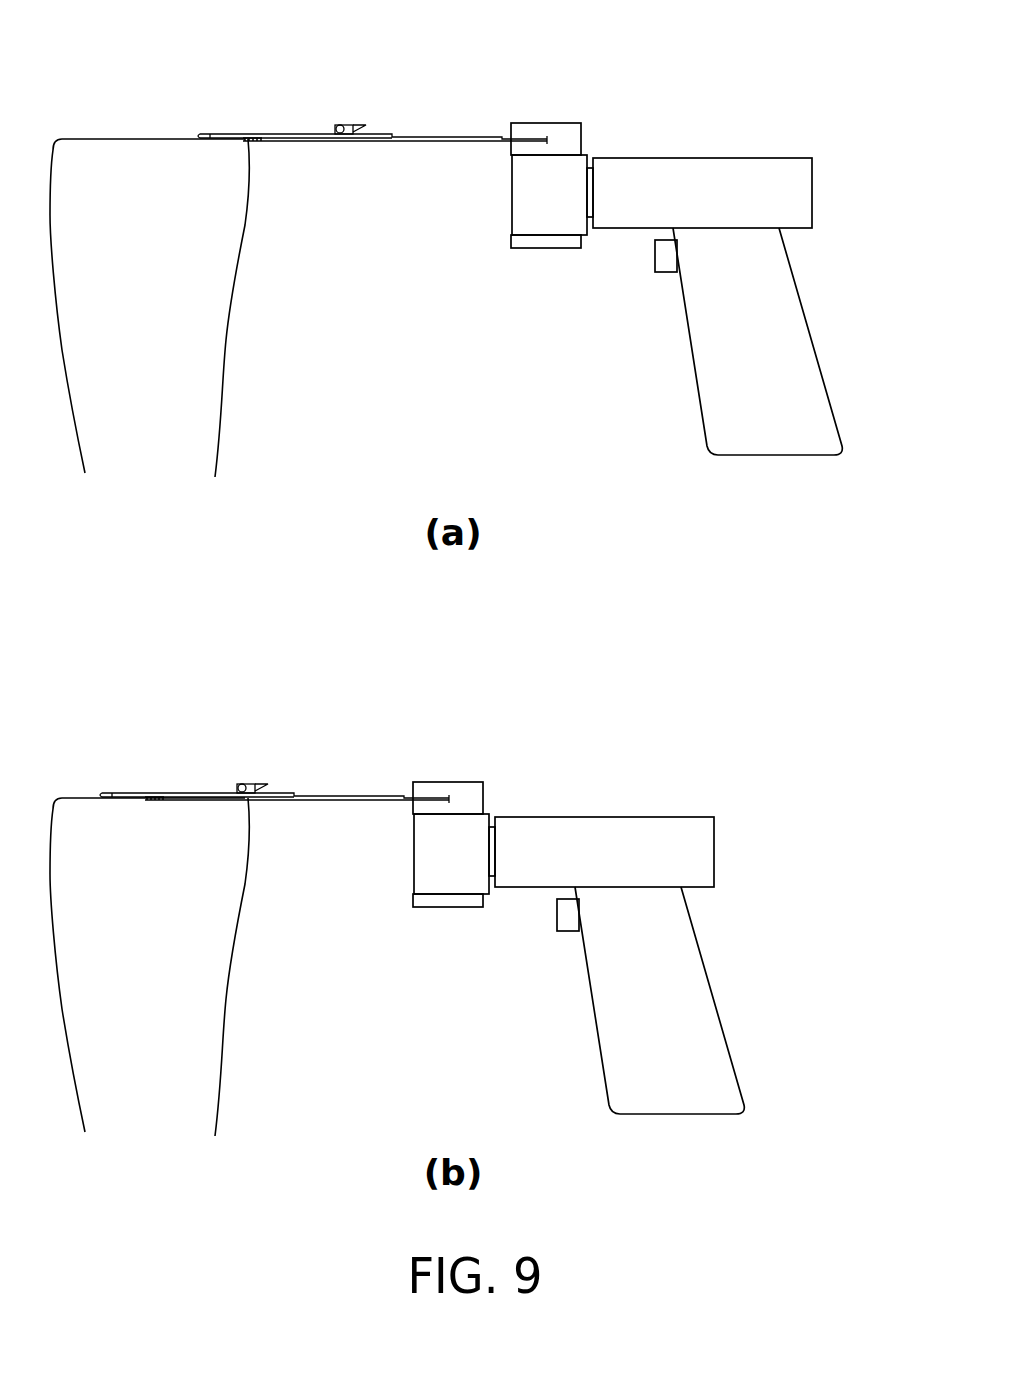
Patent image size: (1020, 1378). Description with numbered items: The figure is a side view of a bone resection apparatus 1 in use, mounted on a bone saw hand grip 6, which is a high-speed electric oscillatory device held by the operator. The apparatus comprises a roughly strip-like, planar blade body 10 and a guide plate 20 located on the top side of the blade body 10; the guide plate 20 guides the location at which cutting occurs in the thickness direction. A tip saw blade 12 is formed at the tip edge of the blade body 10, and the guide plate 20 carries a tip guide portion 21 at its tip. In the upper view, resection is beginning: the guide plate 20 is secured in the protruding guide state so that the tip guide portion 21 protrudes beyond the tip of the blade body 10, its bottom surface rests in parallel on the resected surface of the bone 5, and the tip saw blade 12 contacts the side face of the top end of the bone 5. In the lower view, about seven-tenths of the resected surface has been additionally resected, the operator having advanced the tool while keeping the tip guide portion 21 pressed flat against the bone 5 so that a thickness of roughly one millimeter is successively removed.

The bone resection apparatus 1 is at (462, 90).
The bone 5 is at (227, 382).
The bone saw hand grip 6 is at (820, 360).
The blade body 10 is at (442, 143).
The tip saw blade 12 is at (245, 142).
The guide plate 20 is at (293, 133).
The tip guide portion 21 is at (197, 133).